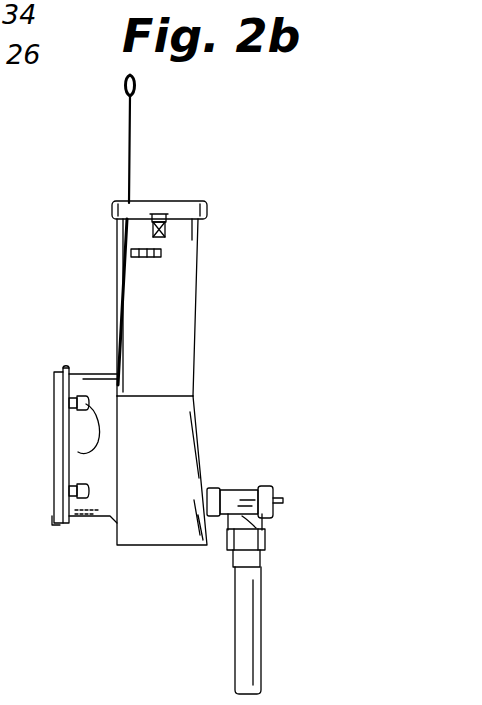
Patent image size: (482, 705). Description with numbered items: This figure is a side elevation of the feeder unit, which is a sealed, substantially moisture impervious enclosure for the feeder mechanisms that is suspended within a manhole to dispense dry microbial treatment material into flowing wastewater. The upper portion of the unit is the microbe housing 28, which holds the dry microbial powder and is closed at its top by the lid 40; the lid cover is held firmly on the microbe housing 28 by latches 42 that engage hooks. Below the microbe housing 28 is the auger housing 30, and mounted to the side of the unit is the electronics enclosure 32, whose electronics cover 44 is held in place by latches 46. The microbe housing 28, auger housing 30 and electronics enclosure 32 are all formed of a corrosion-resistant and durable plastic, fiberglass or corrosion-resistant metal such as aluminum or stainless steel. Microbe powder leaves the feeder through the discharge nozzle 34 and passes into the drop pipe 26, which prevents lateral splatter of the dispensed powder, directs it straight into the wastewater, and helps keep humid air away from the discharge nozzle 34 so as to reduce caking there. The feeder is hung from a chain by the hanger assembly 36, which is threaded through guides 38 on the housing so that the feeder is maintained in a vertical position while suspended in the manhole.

The drop pipe 26 is at (261, 612).
The microbe housing 28 is at (178, 326).
The auger housing 30 is at (146, 533).
The electronics enclosure 32 is at (97, 372).
The discharge nozzle 34 is at (219, 485).
The hanger assembly 36 is at (128, 165).
The guides 38 is at (137, 257).
The lid 40 is at (196, 207).
The latches 42 is at (165, 232).
The electronics cover 44 is at (56, 523).
The latches 46 is at (80, 462).